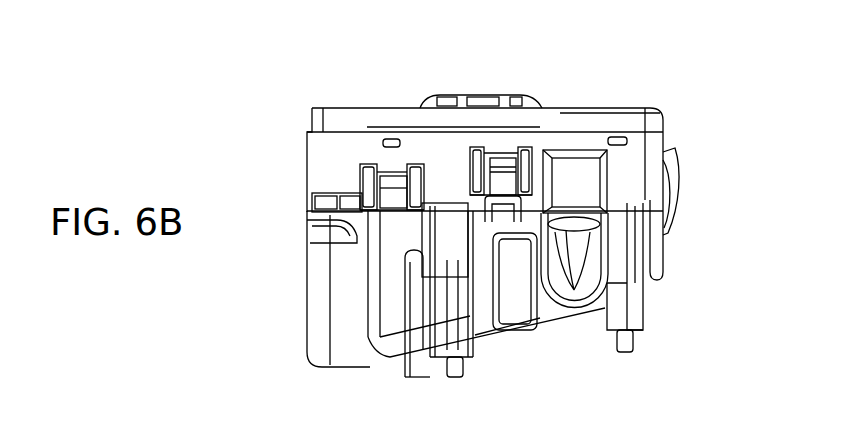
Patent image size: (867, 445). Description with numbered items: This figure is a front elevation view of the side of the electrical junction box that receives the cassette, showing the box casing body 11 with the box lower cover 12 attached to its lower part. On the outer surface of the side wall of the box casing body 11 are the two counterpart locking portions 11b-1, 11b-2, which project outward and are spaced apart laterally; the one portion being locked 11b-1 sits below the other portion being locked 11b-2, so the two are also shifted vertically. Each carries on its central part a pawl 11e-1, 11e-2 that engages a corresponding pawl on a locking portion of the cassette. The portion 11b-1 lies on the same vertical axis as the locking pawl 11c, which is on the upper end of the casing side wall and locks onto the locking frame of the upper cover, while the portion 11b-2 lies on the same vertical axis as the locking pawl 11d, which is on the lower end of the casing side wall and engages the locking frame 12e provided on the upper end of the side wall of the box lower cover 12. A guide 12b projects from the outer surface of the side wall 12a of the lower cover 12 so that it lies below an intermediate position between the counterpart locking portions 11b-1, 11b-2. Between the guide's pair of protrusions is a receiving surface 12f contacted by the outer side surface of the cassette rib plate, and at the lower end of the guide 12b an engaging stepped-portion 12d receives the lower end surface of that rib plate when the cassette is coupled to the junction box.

The box casing body 11 is at (663, 131).
The counterpart locking portion 11b-1 is at (363, 177).
The counterpart locking portion 11b-2 is at (535, 163).
The locking pawl 11c is at (398, 138).
The locking pawl 11d is at (558, 292).
The pawl 11e-1 is at (403, 178).
The pawl 11e-2 is at (503, 162).
The box lower cover 12 is at (662, 245).
The side wall 12a is at (392, 278).
The guide 12b is at (415, 340).
The engaging stepped-portion 12d is at (500, 220).
The locking frame 12e is at (650, 294).
The receiving surface 12f is at (470, 352).